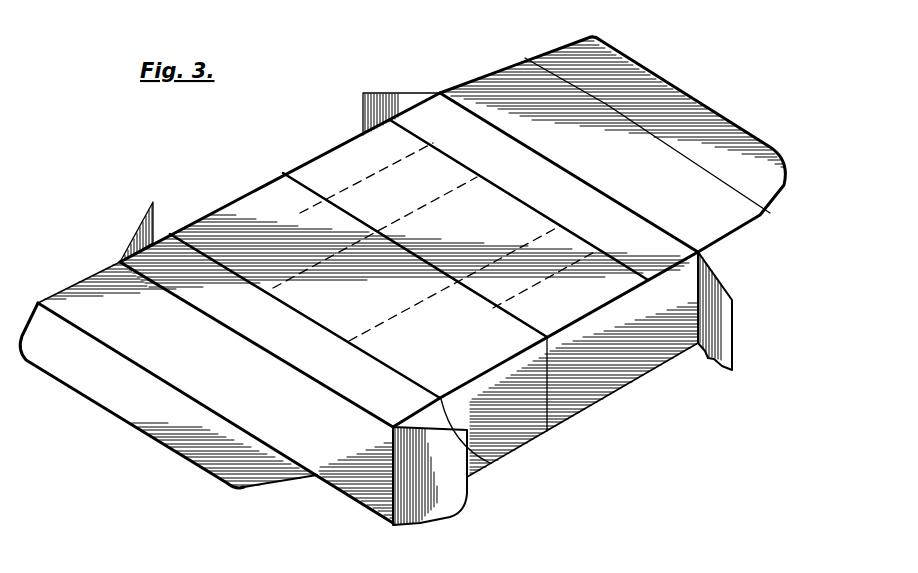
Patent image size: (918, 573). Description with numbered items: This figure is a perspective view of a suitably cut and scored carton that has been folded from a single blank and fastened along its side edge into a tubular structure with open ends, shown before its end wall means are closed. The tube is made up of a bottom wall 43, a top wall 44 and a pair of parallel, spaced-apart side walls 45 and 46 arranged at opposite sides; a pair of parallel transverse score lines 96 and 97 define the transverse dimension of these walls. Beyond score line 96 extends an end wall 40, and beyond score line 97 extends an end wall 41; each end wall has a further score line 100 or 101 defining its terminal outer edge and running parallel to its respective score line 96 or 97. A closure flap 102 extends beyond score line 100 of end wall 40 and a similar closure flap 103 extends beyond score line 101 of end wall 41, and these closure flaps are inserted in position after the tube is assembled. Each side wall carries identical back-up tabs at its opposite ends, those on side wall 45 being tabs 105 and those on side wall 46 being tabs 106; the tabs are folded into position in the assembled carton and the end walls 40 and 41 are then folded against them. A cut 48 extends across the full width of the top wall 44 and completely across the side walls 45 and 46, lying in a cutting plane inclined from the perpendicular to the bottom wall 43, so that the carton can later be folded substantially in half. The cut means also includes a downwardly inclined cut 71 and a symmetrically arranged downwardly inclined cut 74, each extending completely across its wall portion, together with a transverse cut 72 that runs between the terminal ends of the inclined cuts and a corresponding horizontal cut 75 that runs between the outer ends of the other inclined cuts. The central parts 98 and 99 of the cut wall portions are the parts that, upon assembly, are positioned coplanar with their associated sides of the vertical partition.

The end wall 40 is at (88, 292).
The end wall 41 is at (513, 82).
The bottom wall 43 is at (353, 478).
The top wall 44 is at (337, 170).
The side wall 45 is at (256, 187).
The side wall 46 is at (637, 363).
The cut 48 is at (302, 189).
The cut 71 is at (487, 454).
The cut 72 is at (309, 318).
The cut 74 is at (605, 378).
The horizontal cut 75 is at (513, 197).
The score line 96 is at (213, 318).
The score line 97 is at (603, 193).
The central part 98 is at (351, 316).
The central part 99 is at (453, 231).
The score line 100 is at (167, 386).
The score line 101 is at (623, 117).
The closure flap 102 is at (80, 377).
The closure flap 103 is at (700, 113).
The back-up tab 105 is at (393, 96).
The back-up tab 106 is at (448, 511).